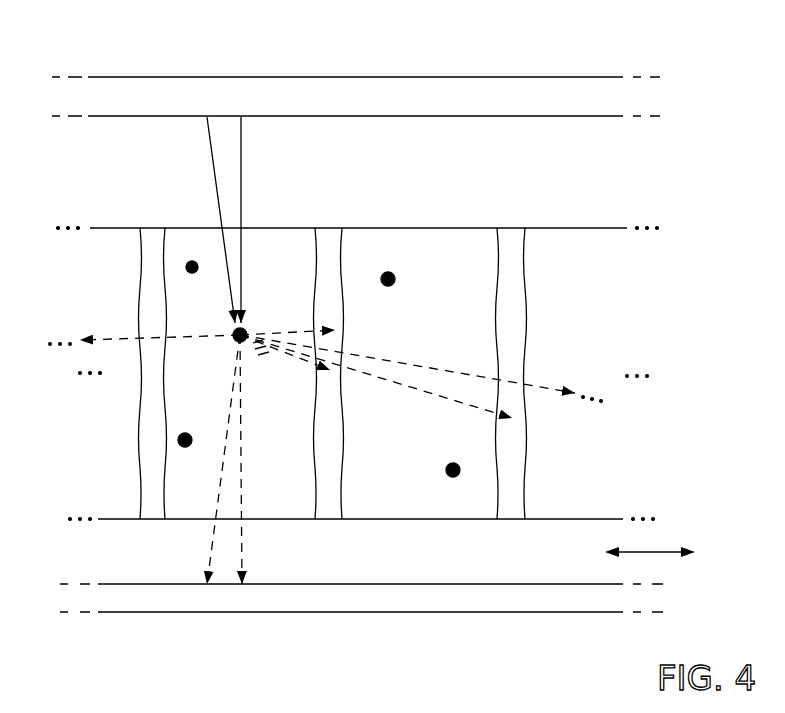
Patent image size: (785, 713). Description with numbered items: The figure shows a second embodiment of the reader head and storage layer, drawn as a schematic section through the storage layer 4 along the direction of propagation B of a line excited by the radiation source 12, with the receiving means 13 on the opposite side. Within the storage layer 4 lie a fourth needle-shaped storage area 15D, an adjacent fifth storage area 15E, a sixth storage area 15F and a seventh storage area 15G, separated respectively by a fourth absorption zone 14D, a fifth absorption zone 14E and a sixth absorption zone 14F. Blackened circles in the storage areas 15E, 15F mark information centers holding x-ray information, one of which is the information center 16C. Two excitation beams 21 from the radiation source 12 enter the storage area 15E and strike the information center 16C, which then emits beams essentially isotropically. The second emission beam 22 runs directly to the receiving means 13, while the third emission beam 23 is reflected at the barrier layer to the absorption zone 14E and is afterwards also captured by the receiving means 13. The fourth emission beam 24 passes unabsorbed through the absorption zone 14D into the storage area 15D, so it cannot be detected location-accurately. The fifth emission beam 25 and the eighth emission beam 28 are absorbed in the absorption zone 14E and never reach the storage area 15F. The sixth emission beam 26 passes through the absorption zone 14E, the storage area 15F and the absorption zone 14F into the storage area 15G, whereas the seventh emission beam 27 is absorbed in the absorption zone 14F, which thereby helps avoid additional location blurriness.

The storage layer 4 is at (617, 221).
The radiation source 12 is at (461, 85).
The receiving means 13 is at (375, 612).
The fourth absorption zone 14D is at (150, 242).
The fifth absorption zone 14E is at (331, 240).
The sixth absorption zone 14F is at (515, 238).
The fourth needle-shaped storage area 15D is at (110, 292).
The fifth needle-shaped storage area 15E is at (290, 238).
The sixth needle-shaped storage area 15F is at (430, 238).
The seventh needle-shaped storage area 15G is at (581, 238).
The information center 16C is at (243, 318).
The excitation beams 21 is at (210, 160).
The second emission beam 22 is at (212, 540).
The third emission beam 23 is at (268, 548).
The fourth emission beam 24 is at (197, 340).
The fifth emission beam 25 is at (268, 330).
The sixth emission beam 26 is at (415, 365).
The seventh emission beam 27 is at (432, 398).
The eighth emission beam 28 is at (289, 355).
The direction of propagation B is at (660, 551).